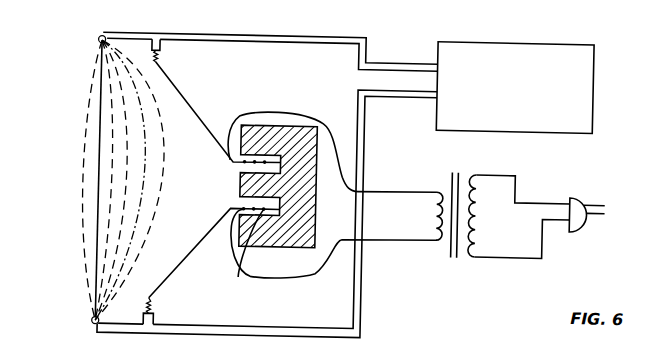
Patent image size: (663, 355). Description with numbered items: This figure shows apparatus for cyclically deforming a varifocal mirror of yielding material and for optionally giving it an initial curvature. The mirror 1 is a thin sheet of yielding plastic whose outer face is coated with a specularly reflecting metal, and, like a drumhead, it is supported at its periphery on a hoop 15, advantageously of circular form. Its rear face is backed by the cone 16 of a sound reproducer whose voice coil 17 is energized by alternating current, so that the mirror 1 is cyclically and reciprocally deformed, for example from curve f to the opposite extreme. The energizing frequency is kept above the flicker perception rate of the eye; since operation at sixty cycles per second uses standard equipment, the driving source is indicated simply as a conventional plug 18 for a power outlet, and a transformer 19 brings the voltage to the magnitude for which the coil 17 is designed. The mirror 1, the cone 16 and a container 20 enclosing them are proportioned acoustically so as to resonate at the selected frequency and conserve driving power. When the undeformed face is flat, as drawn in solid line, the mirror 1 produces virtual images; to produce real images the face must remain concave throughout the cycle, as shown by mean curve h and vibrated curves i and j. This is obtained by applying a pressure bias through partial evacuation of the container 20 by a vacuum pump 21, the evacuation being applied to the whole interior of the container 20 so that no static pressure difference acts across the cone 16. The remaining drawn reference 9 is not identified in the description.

The mirror 1 is at (98, 131).
The electron beam path 9 is at (113, 186).
The curve f is at (84, 173).
The mean curve h is at (147, 183).
The vibrated curve i is at (130, 156).
The vibrated curve j is at (157, 228).
The hoop 15 is at (96, 42).
The cone 16 is at (176, 275).
The coil 17 is at (240, 279).
The plug 18 is at (575, 195).
The transformer 19 is at (447, 266).
The container 20 is at (364, 305).
The vacuum pump 21 is at (573, 121).